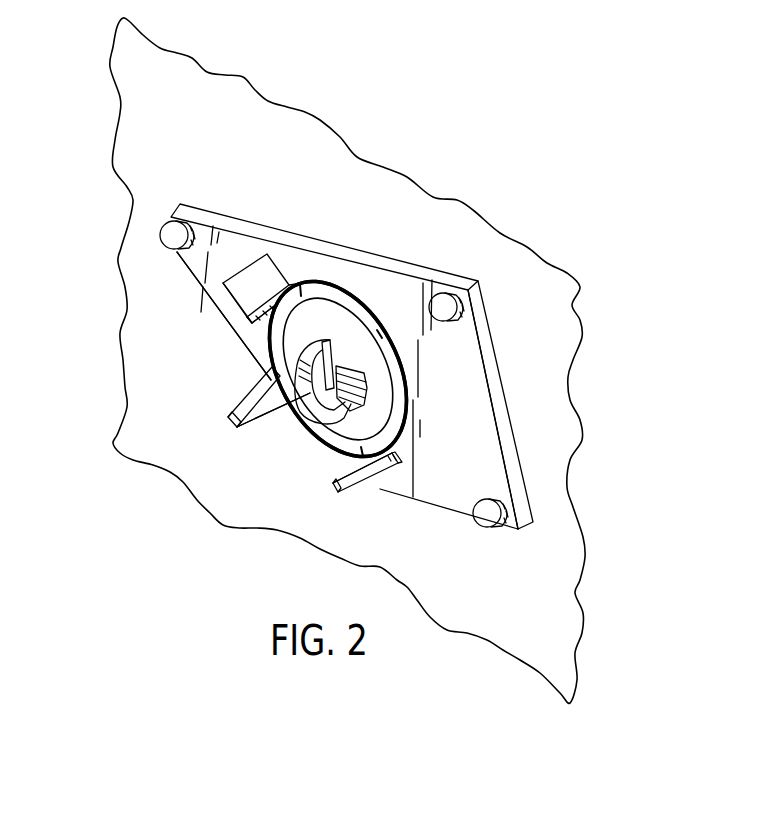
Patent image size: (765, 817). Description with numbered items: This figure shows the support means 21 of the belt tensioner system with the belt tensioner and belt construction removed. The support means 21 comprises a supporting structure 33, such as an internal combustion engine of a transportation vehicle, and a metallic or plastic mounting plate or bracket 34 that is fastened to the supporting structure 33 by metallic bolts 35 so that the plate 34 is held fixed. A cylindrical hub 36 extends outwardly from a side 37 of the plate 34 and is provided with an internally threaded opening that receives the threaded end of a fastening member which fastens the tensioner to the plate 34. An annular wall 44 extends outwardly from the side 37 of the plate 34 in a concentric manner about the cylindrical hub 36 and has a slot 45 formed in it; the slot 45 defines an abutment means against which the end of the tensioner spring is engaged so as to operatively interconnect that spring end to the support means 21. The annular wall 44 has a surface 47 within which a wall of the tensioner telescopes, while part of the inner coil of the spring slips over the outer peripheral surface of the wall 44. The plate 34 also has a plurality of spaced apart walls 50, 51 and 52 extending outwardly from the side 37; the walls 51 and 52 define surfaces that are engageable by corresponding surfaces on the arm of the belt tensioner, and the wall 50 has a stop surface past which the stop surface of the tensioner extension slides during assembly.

The support means 21 is at (475, 388).
The supporting structure 33 is at (533, 273).
The mounting plate 34 is at (488, 443).
The bolts 35 is at (160, 240).
The cylindrical hub 36 is at (292, 408).
The side of the plate 37 is at (196, 273).
The annular wall 44 is at (332, 440).
The slot 45 is at (347, 367).
The surface of the annular wall 47 is at (284, 378).
The wall 50 is at (240, 301).
The wall 51 is at (247, 392).
The wall 52 is at (368, 478).